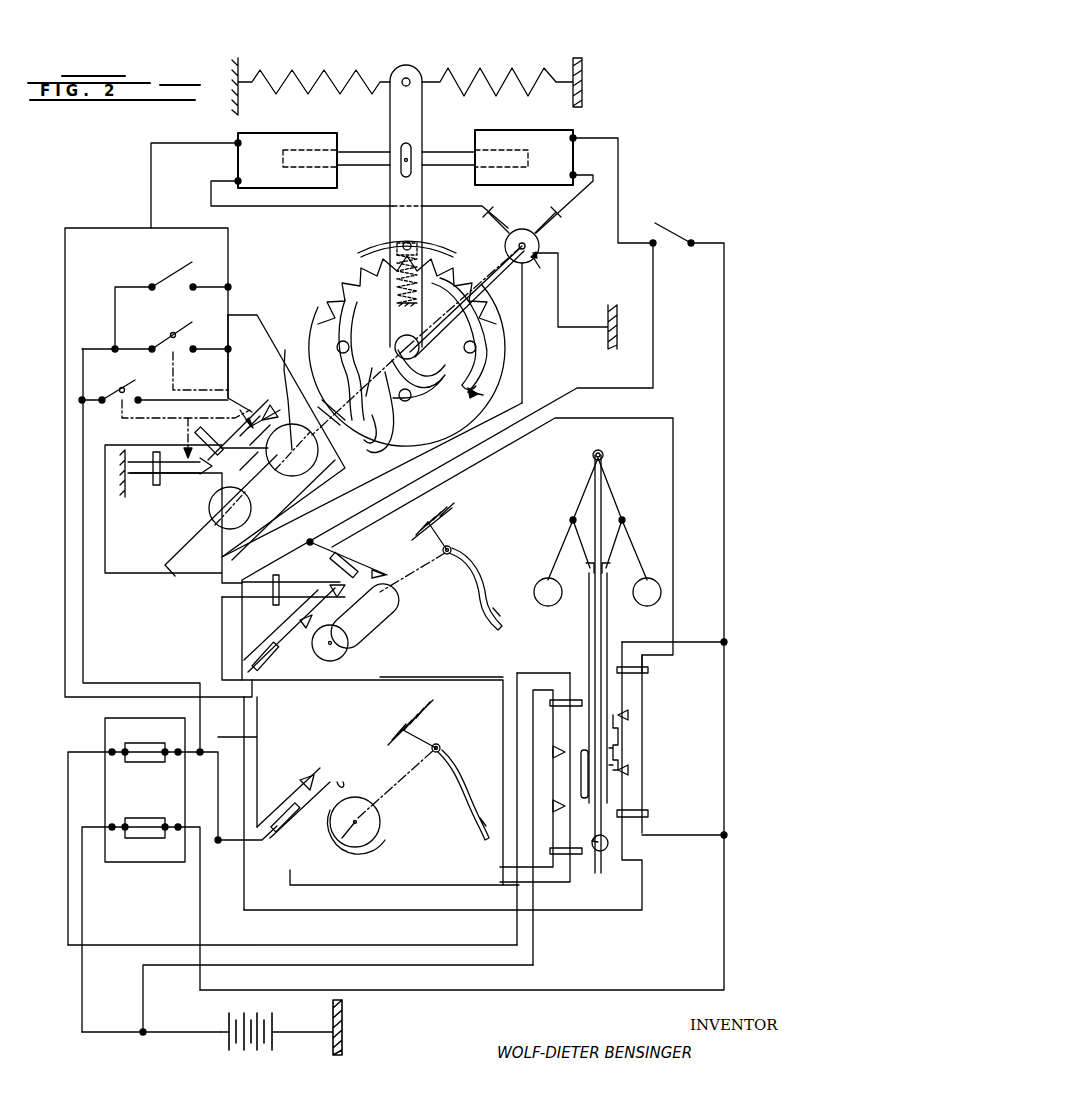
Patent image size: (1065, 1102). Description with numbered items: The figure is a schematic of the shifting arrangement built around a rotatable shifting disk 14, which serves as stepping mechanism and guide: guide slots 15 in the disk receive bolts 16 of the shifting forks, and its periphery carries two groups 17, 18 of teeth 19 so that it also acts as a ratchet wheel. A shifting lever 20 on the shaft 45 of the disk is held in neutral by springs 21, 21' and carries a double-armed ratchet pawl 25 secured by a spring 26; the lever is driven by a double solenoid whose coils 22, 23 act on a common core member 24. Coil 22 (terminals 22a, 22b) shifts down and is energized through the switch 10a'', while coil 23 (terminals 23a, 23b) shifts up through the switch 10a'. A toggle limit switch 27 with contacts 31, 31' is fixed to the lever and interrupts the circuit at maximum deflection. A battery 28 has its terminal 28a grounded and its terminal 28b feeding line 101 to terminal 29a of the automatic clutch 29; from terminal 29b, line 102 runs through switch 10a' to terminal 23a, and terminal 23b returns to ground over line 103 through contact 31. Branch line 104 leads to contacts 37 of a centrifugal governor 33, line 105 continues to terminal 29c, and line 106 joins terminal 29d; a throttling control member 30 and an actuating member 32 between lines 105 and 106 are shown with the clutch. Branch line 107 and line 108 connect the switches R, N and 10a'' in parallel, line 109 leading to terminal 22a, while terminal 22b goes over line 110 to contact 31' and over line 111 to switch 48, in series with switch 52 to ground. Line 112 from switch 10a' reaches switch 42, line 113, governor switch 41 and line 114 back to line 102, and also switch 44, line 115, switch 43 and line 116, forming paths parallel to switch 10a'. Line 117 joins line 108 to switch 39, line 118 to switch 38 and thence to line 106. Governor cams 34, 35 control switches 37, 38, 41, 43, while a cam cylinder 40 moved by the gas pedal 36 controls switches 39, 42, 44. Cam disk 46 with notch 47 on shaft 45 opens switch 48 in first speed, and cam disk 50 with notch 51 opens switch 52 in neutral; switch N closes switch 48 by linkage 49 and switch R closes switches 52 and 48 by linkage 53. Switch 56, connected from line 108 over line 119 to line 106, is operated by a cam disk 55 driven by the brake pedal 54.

The switch 10a' is at (681, 257).
The switch 10a'' is at (173, 296).
The shifting disk 14 is at (483, 395).
The guide grooves 15 is at (380, 380).
The bolts 16 is at (350, 342).
The group of teeth 17 is at (336, 295).
The group of teeth 18 is at (480, 300).
The teeth 19 is at (445, 272).
The shifting lever 20 is at (392, 210).
The spring 21 is at (314, 96).
The spring 21' is at (497, 65).
The coil 22 is at (322, 140).
The terminal 22a is at (236, 143).
The terminal 22b is at (236, 181).
The coil 23 is at (540, 145).
The terminal 23a is at (575, 138).
The terminal 23b is at (575, 175).
The core member 24 is at (443, 150).
The ratchet pawl 25 is at (430, 246).
The spring 26 is at (396, 284).
The toggle switch 27 is at (540, 268).
The battery 28 is at (232, 1055).
The battery terminal 28a is at (276, 1035).
The battery terminal 28b is at (222, 1035).
The automatic clutch 29 is at (118, 848).
The clutch terminal 29a is at (110, 827).
The clutch terminal 29b is at (180, 827).
The clutch terminal 29c is at (110, 752).
The clutch terminal 29d is at (180, 751).
The control member 30 is at (140, 826).
The contact 31 is at (549, 235).
The contact 31' is at (505, 215).
The actuating member 32 is at (150, 760).
The centrifugal governor 33 is at (610, 538).
The cam 34 is at (585, 800).
The cam 35 is at (625, 800).
The gas pedal 36 is at (480, 574).
The contacts 37 is at (553, 727).
The switch 38 is at (560, 835).
The switch 39 is at (312, 588).
The cam cylinder 40 is at (372, 628).
The switch 41 is at (632, 788).
The switch 42 is at (282, 634).
The switch 43 is at (632, 701).
The switch 44 is at (364, 562).
The shaft 45 is at (340, 432).
The cam disk 46 is at (300, 470).
The notch 47 is at (292, 360).
The switch 48 is at (258, 410).
The mechanical linkage 49 is at (198, 390).
The cam disk 50 is at (222, 538).
The notch 51 is at (252, 506).
The switch 52 is at (195, 478).
The mechanical linkage 53 is at (172, 424).
The brake pedal 54 is at (460, 812).
The cam disk 55 is at (378, 838).
The switch 56 is at (296, 800).
The neutral switch N is at (168, 334).
The reverse switch R is at (120, 392).
The line 101 is at (82, 976).
The line 102 is at (618, 176).
The line 103 is at (590, 185).
The branch line 104 is at (512, 962).
The line 105 is at (420, 945).
The line 106 is at (194, 752).
The branch line 107 is at (135, 683).
The line 108 is at (230, 244).
The line 109 is at (151, 185).
The line 110 is at (263, 212).
The line 111 is at (522, 370).
The branch line 112 is at (655, 326).
The line 113 is at (258, 738).
The line 114 is at (680, 836).
The line 115 is at (510, 442).
The line 116 is at (682, 642).
The line 117 is at (265, 343).
The line 118 is at (218, 652).
The line 119 is at (258, 842).